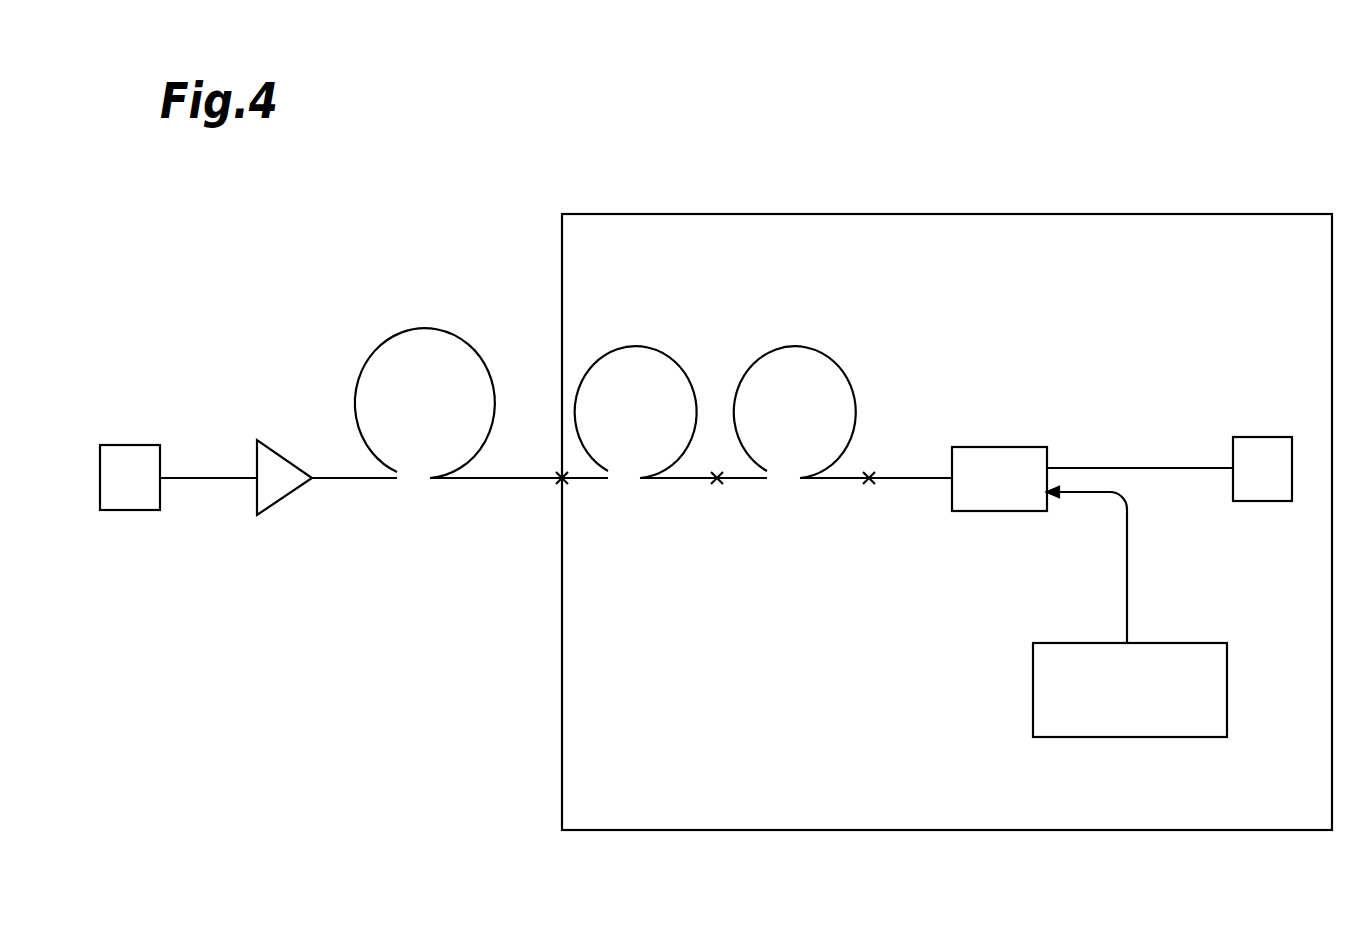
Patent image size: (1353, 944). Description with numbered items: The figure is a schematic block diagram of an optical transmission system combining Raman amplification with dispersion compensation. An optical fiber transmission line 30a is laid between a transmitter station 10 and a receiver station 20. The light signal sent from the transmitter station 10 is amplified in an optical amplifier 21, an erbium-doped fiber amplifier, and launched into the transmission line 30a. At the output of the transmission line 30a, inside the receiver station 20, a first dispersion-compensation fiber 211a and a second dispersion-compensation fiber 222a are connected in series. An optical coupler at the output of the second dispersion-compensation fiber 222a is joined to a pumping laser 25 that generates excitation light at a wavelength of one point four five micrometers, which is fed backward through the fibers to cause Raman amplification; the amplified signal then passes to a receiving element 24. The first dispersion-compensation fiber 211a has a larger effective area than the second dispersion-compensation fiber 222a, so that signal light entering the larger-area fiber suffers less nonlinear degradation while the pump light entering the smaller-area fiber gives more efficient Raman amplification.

The transmitter station 10 is at (128, 445).
The optical amplifier 21 is at (290, 500).
The optical fiber transmission line 30a is at (428, 328).
The receiver station 20 is at (1002, 214).
The dispersion-compensation fiber 211a is at (638, 346).
The dispersion-compensation fiber 222a is at (796, 346).
The receiver 24 is at (1267, 502).
The 1.45 um pumping laser 25 is at (1128, 738).